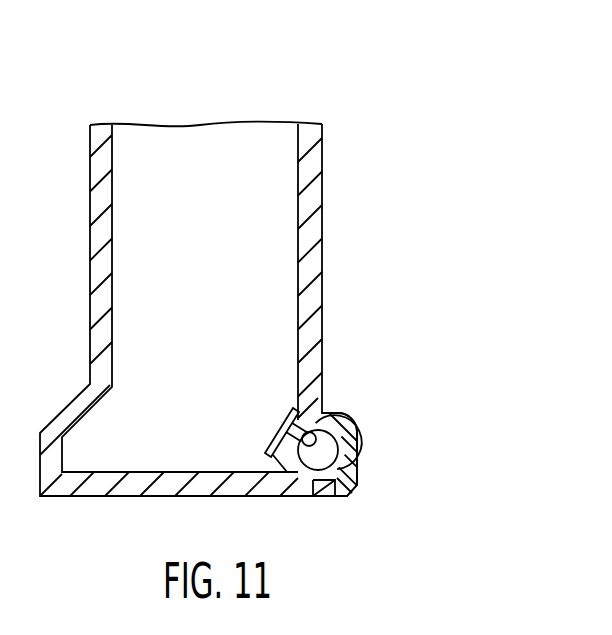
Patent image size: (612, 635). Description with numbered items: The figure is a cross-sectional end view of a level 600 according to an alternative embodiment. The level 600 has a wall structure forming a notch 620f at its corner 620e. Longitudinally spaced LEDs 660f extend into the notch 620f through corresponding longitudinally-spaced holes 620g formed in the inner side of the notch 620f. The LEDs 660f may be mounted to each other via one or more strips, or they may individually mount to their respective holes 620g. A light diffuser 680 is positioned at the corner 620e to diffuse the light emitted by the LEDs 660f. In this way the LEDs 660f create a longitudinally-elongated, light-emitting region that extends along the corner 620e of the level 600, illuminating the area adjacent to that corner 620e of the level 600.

The level 600 is at (123, 110).
The corner 620e is at (377, 495).
The notch 620f is at (316, 484).
The holes 620g is at (323, 427).
The LEDs 660f is at (275, 433).
The light diffuser 680 is at (357, 460).